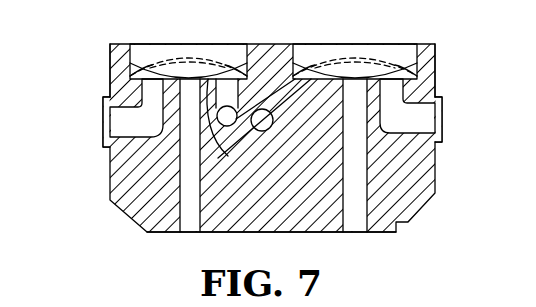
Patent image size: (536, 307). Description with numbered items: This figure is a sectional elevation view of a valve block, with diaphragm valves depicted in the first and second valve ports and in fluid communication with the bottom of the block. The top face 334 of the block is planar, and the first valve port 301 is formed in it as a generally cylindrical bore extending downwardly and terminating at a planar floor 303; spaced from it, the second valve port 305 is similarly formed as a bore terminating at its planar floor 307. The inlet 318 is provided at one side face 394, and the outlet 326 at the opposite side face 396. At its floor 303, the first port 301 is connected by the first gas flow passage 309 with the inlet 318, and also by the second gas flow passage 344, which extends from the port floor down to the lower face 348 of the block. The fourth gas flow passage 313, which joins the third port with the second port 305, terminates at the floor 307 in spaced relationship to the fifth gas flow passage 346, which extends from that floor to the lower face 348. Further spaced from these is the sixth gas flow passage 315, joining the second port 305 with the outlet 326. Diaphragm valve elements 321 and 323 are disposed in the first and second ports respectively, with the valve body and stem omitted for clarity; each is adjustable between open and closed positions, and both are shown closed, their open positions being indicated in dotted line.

The first valve port 301 is at (162, 50).
The second valve port 305 is at (388, 48).
The diaphragm valve element 321 is at (247, 67).
The diaphragm valve element 323 is at (295, 65).
The top face 334 is at (261, 44).
The side face 394 is at (110, 72).
The side face 396 is at (436, 72).
The inlet 318 is at (103, 148).
The outlet 326 is at (440, 141).
The first gas flow passage 309 is at (127, 125).
The sixth gas flow passage 315 is at (421, 123).
The planar floor 303 is at (216, 147).
The planar floor 307 is at (303, 81).
The fourth gas flow passage 313 is at (273, 119).
The second gas flow passage 344 is at (187, 226).
The fifth gas flow passage 346 is at (358, 222).
The lower face 348 is at (271, 232).